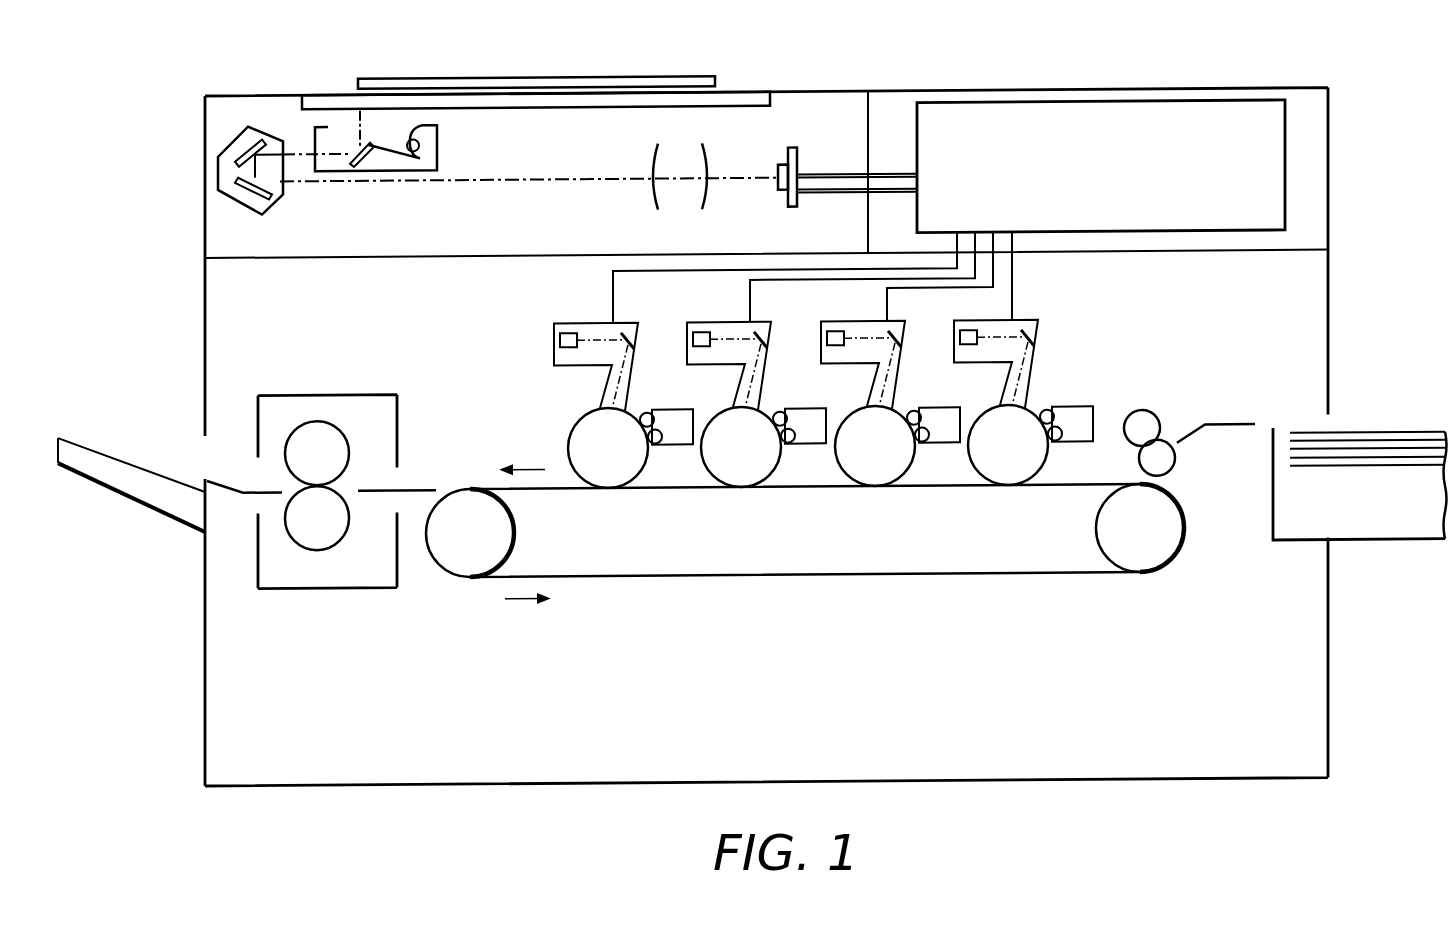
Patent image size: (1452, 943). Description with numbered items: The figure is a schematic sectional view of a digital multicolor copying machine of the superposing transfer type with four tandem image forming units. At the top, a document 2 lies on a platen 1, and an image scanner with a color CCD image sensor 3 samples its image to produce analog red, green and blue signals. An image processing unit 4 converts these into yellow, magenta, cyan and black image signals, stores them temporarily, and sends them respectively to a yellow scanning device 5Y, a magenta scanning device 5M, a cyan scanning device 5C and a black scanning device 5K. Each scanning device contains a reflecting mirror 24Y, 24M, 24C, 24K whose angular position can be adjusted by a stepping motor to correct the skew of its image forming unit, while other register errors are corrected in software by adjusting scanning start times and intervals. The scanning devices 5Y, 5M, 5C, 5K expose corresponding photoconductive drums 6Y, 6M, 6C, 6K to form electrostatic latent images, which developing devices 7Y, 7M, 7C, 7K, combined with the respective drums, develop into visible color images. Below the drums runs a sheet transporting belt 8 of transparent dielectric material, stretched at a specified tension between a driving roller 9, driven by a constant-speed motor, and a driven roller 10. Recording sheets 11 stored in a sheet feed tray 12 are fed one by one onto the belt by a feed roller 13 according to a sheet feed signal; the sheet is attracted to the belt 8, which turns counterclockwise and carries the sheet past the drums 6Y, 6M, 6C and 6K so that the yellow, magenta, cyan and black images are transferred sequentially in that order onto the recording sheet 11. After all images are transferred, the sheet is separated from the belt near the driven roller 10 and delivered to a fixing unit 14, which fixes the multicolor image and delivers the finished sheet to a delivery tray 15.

The platen 1 is at (745, 96).
The document 2 is at (385, 80).
The color CCD image sensor 3 is at (793, 152).
The image processing unit 4 is at (1047, 108).
The black scanning device 5K is at (755, 321).
The cyan scanning device 5C is at (831, 321).
The magenta scanning device 5M is at (907, 320).
The yellow scanning device 5Y is at (996, 320).
The reflecting mirror 24K is at (632, 334).
The reflecting mirror 24C is at (765, 334).
The reflecting mirror 24M is at (916, 336).
The reflecting mirror 24Y is at (1027, 341).
The photoconductive drum 6K is at (588, 467).
The photoconductive drum 6C is at (721, 467).
The photoconductive drum 6M is at (855, 467).
The photoconductive drum 6Y is at (988, 467).
The developing device 7K is at (666, 408).
The developing device 7C is at (799, 407).
The developing device 7M is at (933, 406).
The developing device 7Y is at (1066, 405).
The sheet transporting belt 8 is at (878, 582).
The driving roller 9 is at (1128, 545).
The driven roller 10 is at (455, 545).
The recording sheet 11 is at (1375, 441).
The sheet feed tray 12 is at (1375, 549).
The feed roller 13 is at (1148, 417).
The fixing unit 14 is at (321, 422).
The delivery tray 15 is at (131, 462).